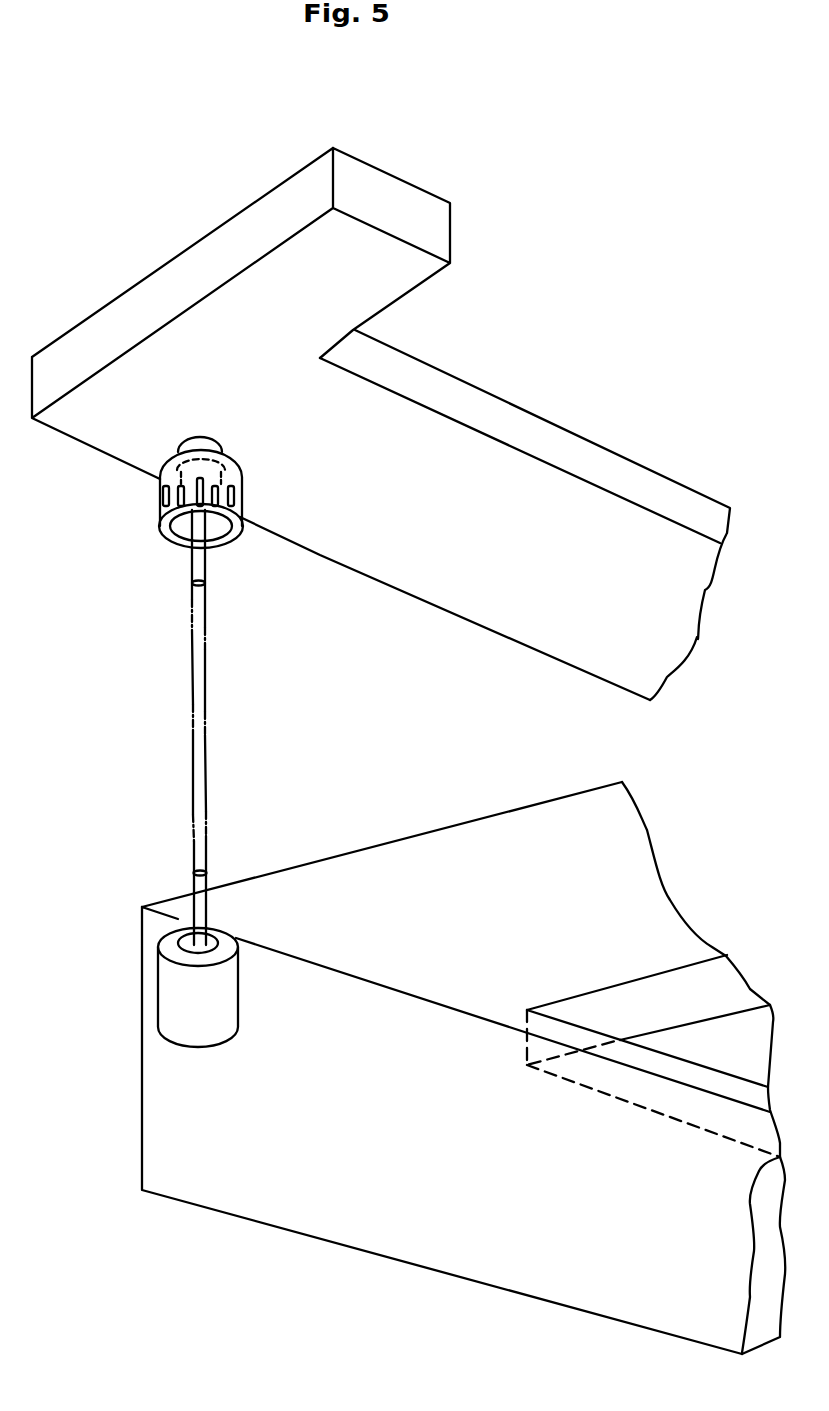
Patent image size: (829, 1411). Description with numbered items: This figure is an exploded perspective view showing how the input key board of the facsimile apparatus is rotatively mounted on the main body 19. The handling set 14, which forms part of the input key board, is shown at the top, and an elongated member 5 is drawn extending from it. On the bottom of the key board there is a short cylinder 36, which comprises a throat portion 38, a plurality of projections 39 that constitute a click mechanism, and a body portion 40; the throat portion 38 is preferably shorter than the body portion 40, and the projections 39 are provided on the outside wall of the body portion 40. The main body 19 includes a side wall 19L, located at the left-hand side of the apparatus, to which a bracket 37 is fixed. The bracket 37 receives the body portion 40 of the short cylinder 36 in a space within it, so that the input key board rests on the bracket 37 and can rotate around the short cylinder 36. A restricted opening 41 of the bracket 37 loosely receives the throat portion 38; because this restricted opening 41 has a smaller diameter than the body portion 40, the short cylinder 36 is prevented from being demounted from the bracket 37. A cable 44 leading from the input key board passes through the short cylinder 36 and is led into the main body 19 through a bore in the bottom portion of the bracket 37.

The handling set 14 is at (68, 364).
The frame arm 5 is at (412, 567).
The short cylinder 36 is at (167, 499).
The throat portion 38 is at (160, 478).
The projections 39 is at (226, 484).
The body portion 40 is at (158, 495).
The cable 44 is at (198, 763).
The main body 19 is at (332, 884).
The restricted opening 41 is at (214, 937).
The bracket 37 is at (157, 990).
The side wall 19L is at (172, 1160).